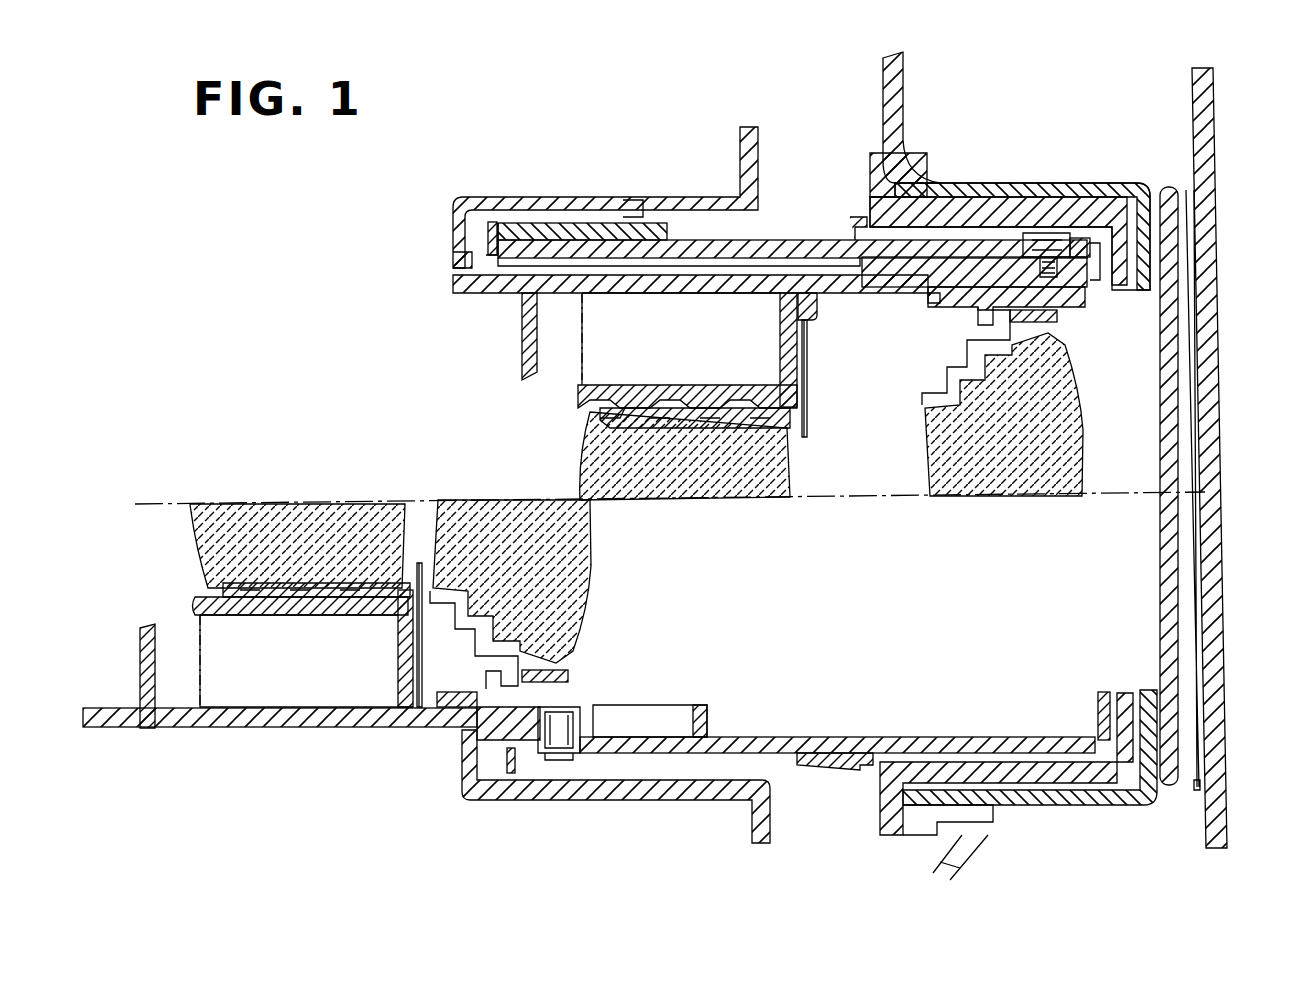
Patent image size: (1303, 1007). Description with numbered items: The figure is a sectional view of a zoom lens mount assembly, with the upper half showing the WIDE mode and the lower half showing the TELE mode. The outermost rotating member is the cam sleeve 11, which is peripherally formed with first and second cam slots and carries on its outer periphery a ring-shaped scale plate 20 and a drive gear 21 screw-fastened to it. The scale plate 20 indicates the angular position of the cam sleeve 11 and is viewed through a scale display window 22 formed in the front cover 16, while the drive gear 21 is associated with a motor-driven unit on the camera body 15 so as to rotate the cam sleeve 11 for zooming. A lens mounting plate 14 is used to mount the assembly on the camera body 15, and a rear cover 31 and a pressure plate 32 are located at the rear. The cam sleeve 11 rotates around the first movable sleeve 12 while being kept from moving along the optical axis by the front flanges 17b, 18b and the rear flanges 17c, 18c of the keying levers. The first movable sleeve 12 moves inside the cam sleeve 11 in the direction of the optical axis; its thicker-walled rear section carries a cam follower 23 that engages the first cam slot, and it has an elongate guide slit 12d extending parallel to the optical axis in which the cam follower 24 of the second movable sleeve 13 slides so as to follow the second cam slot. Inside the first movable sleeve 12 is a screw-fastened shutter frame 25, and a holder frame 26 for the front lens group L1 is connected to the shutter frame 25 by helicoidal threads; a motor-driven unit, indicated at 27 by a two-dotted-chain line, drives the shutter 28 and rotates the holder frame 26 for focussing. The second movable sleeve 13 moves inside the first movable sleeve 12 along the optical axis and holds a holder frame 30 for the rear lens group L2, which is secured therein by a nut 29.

The cam sleeve 11 is at (772, 240).
The first movable sleeve 12 is at (852, 290).
The elongate guide slit 12d is at (660, 720).
The second movable sleeve 13 is at (946, 300).
The lens mounting plate 14 is at (1012, 207).
The camera body 15 is at (905, 63).
The front cover 16 is at (676, 205).
The front flange 17b is at (453, 227).
The rear flange 17c is at (1095, 270).
The front flange 18b is at (500, 800).
The rear flange 18c is at (1098, 700).
The scale plate 20 is at (514, 232).
The drive gear 21 is at (858, 222).
The scale display window 22 is at (590, 230).
The cam follower 23 is at (1056, 232).
The cam follower 24 is at (565, 768).
The shutter frame 25 is at (780, 343).
The holder frame 26 is at (690, 395).
The hinge axis 27 is at (582, 380).
The shutter 28 is at (812, 382).
The nut 29 is at (1058, 320).
The holder frame 30 is at (925, 395).
The rear cover 31 is at (1228, 292).
The pressure plate 32 is at (1165, 557).
The front lens group L1 is at (592, 470).
The rear lens group L2 is at (1075, 437).